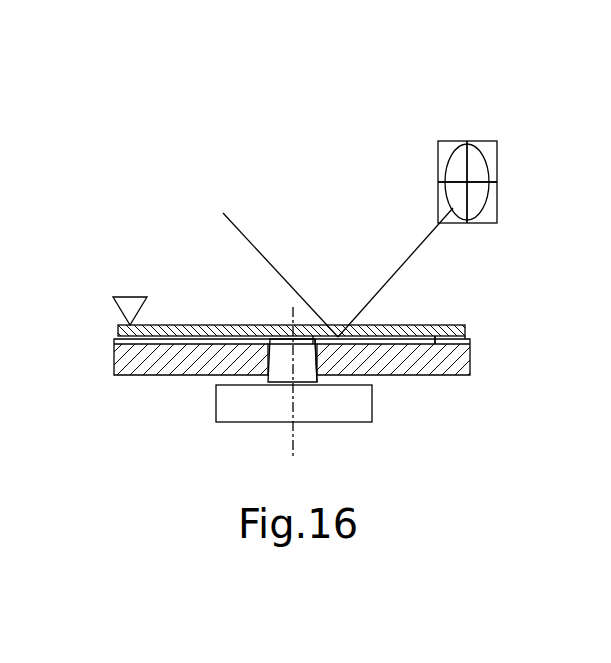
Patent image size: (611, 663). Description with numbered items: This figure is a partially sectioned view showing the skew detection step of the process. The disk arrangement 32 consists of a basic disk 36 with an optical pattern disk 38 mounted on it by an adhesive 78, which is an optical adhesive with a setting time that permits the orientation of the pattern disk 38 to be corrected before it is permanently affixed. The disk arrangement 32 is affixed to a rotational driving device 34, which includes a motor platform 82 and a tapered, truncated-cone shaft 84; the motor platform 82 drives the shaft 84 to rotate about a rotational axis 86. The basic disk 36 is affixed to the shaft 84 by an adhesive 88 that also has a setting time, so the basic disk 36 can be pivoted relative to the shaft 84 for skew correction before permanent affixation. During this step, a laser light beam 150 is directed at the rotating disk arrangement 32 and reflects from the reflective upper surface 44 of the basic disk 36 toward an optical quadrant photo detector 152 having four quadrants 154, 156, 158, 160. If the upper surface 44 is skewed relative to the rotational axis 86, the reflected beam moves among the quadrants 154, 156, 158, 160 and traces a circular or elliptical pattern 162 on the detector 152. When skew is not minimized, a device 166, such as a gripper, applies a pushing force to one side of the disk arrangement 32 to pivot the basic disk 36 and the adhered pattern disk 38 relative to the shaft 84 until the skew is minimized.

The disk arrangement 32 is at (483, 330).
The rotational driving device 34 is at (188, 410).
The basic disk 36 is at (465, 355).
The optical pattern disk 38 is at (465, 323).
The upper surface 44 is at (388, 333).
The adhesive 78 is at (436, 333).
The motor platform 82 is at (352, 410).
The shaft 84 is at (276, 342).
The rotational axis 86 is at (293, 442).
The adhesive 88 is at (310, 342).
The laser light beam 150 is at (387, 287).
The optical quadrant photo detector 152 is at (440, 117).
The quadrant 154 is at (492, 149).
The quadrant 156 is at (493, 202).
The quadrant 158 is at (443, 203).
The quadrant 160 is at (443, 151).
The circular or elliptical pattern 162 is at (492, 172).
The device 166 is at (132, 302).